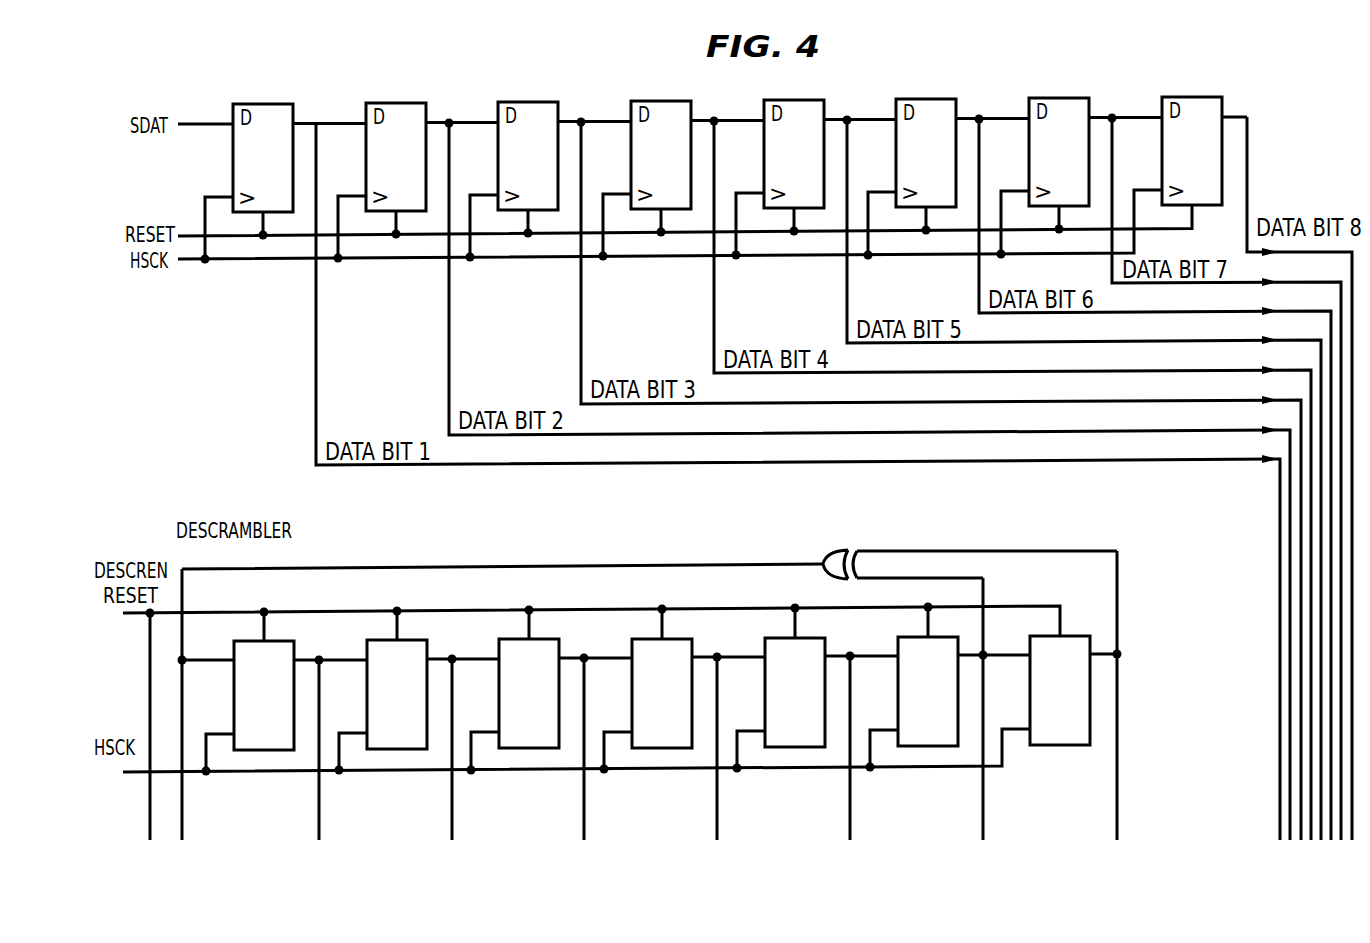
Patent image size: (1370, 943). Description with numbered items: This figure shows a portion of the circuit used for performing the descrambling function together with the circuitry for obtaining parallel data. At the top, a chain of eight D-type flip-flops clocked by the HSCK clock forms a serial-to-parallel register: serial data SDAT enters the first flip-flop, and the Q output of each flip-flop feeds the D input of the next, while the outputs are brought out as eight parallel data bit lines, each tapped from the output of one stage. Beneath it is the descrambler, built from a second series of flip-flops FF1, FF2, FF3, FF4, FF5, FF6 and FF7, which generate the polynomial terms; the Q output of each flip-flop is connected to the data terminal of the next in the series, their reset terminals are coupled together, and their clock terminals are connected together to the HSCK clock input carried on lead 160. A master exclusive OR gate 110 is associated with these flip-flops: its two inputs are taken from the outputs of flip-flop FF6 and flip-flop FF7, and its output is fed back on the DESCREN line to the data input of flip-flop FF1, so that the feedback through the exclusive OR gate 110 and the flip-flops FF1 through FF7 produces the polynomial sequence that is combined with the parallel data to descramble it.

The master exclusive OR gate 110 is at (826, 554).
The lead 160 is at (194, 774).
The flip-flop FF1 is at (264, 695).
The flip-flop FF2 is at (397, 694).
The flip-flop FF3 is at (529, 693).
The flip-flop FF4 is at (662, 693).
The flip-flop FF5 is at (795, 692).
The flip-flop FF6 is at (928, 691).
The flip-flop FF7 is at (1060, 690).